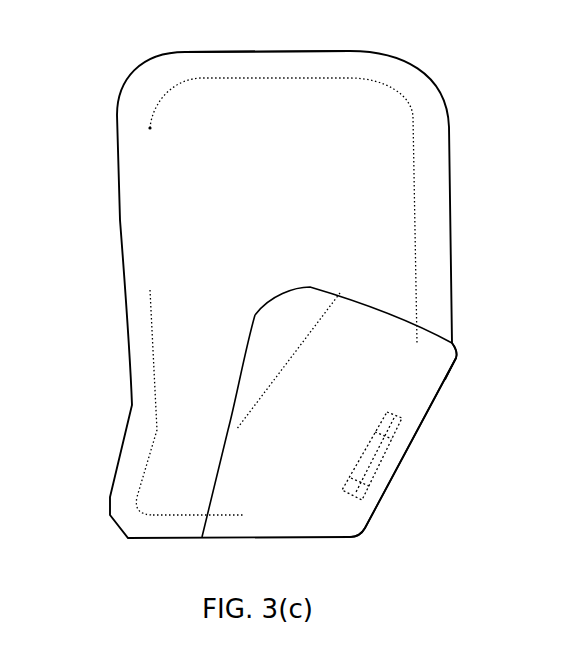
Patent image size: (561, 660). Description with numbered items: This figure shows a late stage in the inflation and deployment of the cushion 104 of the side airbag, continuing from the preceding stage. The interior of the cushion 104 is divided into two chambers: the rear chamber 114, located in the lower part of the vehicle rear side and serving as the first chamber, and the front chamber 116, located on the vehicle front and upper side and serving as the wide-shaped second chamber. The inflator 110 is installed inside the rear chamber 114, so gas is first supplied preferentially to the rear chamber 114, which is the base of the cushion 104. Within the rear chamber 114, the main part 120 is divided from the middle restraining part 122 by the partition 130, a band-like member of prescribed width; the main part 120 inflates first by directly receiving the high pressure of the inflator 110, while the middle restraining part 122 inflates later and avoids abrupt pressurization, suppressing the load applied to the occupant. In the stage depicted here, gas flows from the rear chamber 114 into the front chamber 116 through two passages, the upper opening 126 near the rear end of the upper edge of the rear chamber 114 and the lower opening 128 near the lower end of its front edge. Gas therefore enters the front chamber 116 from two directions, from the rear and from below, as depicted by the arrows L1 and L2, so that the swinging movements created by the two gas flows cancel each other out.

The cushion 104 is at (73, 80).
The front chamber 116 is at (257, 52).
The gas flow arrow L2 is at (275, 80).
The gas flow arrow L1 is at (158, 380).
The lower opening 128 is at (217, 515).
The upper opening 126 is at (415, 322).
The middle restraining part 122 is at (310, 287).
The partition 130 is at (352, 297).
The rear chamber 114 is at (433, 403).
The main part 120 is at (432, 370).
The inflator 110 is at (387, 452).